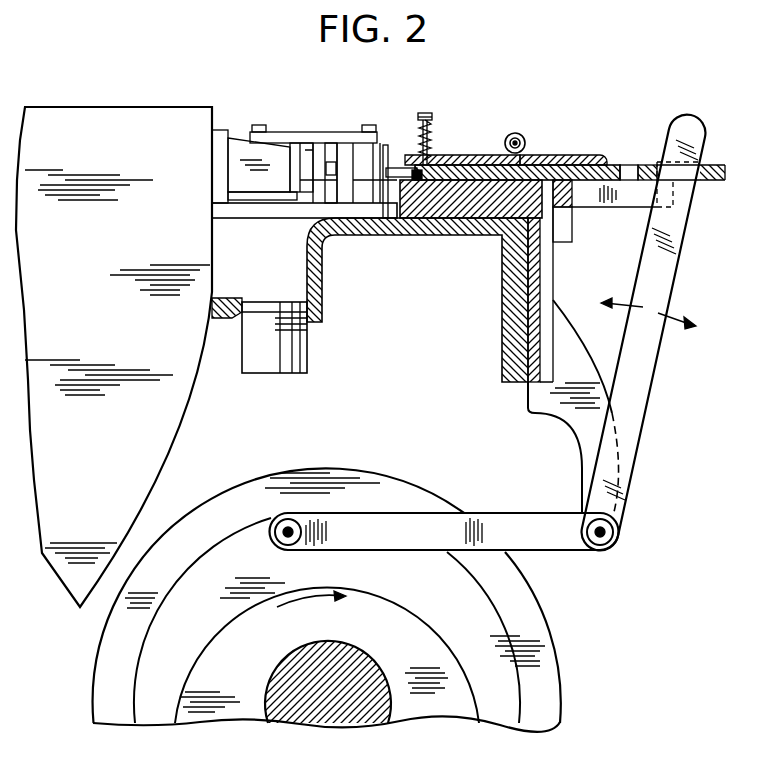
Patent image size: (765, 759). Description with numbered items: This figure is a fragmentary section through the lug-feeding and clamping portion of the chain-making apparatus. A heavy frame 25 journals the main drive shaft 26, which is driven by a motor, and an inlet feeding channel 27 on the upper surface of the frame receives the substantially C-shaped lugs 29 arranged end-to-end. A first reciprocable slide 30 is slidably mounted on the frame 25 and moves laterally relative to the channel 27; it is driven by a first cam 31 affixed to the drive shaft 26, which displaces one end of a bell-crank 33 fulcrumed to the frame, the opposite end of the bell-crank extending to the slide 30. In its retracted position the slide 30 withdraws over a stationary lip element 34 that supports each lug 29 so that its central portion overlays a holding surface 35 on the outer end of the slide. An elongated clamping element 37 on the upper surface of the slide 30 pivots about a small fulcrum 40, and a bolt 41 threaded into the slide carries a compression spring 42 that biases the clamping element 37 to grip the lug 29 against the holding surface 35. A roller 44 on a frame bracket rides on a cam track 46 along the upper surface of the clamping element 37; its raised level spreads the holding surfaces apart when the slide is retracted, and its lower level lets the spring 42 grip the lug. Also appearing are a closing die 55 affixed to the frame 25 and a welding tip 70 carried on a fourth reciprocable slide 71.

The frame 25 is at (106, 327).
The main drive shaft 26 is at (362, 664).
The inlet feeding channel 27 is at (385, 145).
The C-shaped lug 29 is at (398, 166).
The first reciprocable slide 30 is at (568, 160).
The first cam 31 is at (380, 486).
The bell-crank 33 is at (662, 290).
The stationary lip element 34 is at (400, 219).
The holding surface 35 is at (423, 220).
The clamping element 37 is at (488, 157).
The fulcrum 40 is at (462, 158).
The bolt 41 is at (430, 114).
The compression spring 42 is at (432, 146).
The roller 44 is at (520, 135).
The cam track 46 is at (535, 157).
The closing die 55 is at (333, 145).
The welding tip 70 is at (296, 157).
The fourth reciprocable slide 71 is at (238, 158).